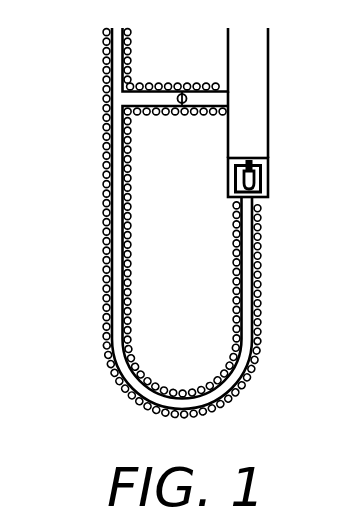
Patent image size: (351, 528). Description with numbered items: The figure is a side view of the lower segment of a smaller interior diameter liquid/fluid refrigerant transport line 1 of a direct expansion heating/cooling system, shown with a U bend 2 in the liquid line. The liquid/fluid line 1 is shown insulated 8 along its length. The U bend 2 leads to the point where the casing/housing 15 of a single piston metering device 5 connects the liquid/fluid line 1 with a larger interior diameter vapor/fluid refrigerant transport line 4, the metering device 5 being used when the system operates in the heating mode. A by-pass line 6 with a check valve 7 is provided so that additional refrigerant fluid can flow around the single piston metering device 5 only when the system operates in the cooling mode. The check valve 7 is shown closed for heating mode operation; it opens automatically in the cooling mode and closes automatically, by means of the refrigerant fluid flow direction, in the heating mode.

The liquid/fluid refrigerant transport line 1 is at (115, 69).
The U bend 2 is at (237, 390).
The vapor/fluid refrigerant transport line 4 is at (255, 48).
The single piston metering device 5 is at (268, 176).
The by-pass line 6 is at (137, 98).
The check valve 7 is at (187, 92).
The insulation 8 is at (103, 265).
The casing/housing 15 is at (232, 180).